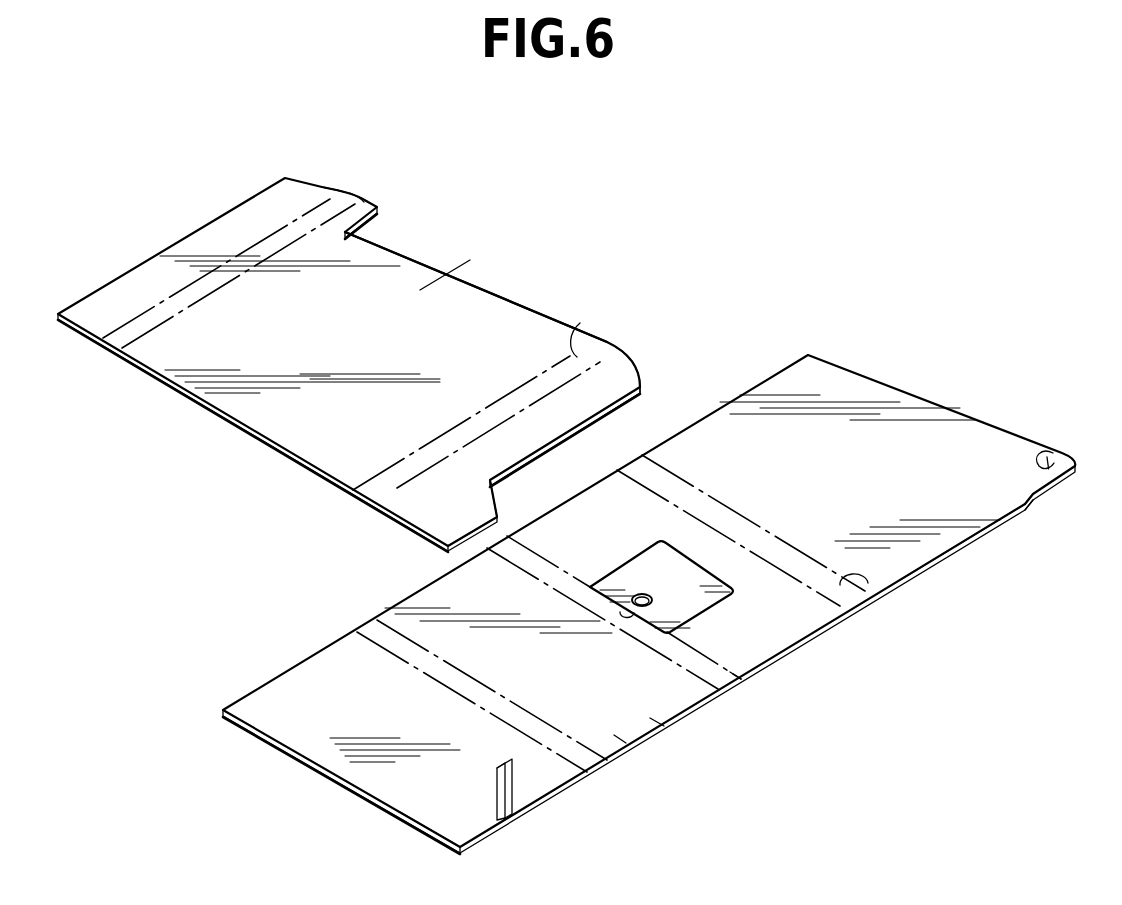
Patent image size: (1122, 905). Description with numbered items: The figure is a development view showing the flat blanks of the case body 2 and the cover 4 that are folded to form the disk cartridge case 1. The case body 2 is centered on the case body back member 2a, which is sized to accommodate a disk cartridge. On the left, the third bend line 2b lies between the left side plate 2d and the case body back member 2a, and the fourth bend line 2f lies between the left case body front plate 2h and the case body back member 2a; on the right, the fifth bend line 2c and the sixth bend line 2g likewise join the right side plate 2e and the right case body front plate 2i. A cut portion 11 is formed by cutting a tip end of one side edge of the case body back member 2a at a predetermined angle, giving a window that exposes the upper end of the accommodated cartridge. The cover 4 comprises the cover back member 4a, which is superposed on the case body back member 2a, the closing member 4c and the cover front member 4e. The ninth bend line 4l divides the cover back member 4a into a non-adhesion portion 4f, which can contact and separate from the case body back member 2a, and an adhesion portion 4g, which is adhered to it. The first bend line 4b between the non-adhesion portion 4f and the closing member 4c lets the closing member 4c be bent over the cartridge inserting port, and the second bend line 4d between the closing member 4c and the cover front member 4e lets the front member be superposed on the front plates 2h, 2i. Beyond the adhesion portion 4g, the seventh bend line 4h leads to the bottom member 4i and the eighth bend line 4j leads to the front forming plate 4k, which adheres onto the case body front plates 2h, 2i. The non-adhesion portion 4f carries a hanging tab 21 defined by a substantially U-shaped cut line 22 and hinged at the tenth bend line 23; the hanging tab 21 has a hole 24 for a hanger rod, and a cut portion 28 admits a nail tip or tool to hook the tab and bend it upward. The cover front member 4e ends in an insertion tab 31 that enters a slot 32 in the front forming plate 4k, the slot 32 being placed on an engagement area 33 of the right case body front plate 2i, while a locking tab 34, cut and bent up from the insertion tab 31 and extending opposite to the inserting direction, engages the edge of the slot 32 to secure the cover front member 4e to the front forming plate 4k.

The disk cartridge case 1 is at (83, 478).
The case body 2 is at (225, 432).
The cover 4 is at (265, 655).
The case body back member 2a is at (440, 283).
The third bend line 2b is at (374, 203).
The fifth bend line 2c is at (572, 352).
The left side plate 2d is at (353, 200).
The right side plate 2e is at (600, 353).
The fourth bend line 2f is at (325, 205).
The sixth bend line 2g is at (633, 357).
The left case body front plate 2h is at (197, 242).
The right case body front plate 2i is at (633, 388).
The cut portion 11 is at (395, 252).
The hanging tab 21 is at (637, 567).
The cut line 22 is at (603, 573).
The tenth bend line 23 is at (673, 547).
The hole 24 is at (720, 602).
The cut portion 28 is at (625, 605).
The insertion tab 31 is at (1067, 457).
The slot 32 is at (497, 787).
The engagement area 33 is at (443, 510).
The locking tab 34 is at (1053, 488).
The cover back member 4a is at (802, 748).
The first bend line 4b is at (817, 587).
The closing member 4c is at (857, 590).
The second bend line 4d is at (873, 583).
The cover front member 4e is at (947, 540).
The non-adhesion portion 4f is at (742, 672).
The adhesion portion 4g is at (657, 720).
The seventh bend line 4h is at (620, 740).
The bottom member 4i is at (596, 755).
The eighth bend line 4j is at (568, 762).
The front forming plate 4k is at (460, 820).
The ninth bend line 4l is at (673, 667).